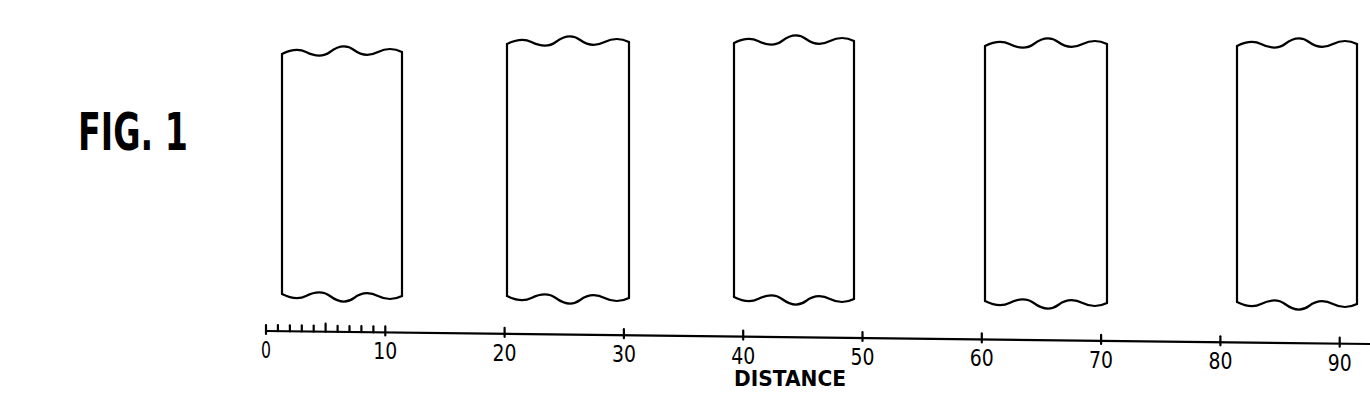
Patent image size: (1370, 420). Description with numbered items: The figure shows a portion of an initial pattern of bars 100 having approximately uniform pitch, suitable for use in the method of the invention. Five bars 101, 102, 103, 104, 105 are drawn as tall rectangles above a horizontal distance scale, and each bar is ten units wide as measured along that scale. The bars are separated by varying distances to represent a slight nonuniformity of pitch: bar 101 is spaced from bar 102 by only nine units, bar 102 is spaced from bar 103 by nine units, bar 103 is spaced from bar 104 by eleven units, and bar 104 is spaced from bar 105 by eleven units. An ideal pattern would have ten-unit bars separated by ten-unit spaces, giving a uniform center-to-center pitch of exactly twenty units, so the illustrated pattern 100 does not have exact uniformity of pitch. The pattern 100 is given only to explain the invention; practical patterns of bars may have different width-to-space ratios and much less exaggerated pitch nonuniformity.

The pattern of bars 100 is at (930, 29).
The bar 101 is at (402, 92).
The bar 102 is at (629, 92).
The bar 103 is at (854, 98).
The bar 104 is at (1107, 146).
The bar 105 is at (1237, 224).